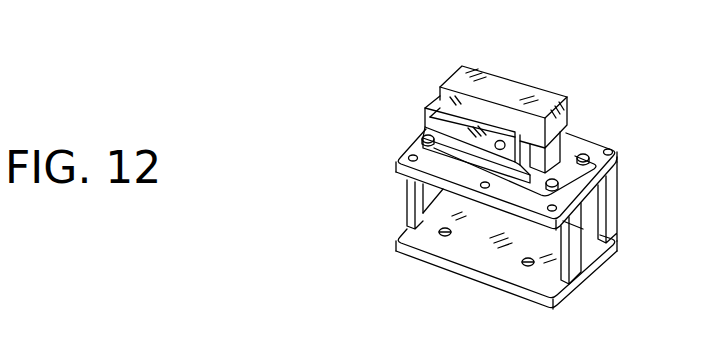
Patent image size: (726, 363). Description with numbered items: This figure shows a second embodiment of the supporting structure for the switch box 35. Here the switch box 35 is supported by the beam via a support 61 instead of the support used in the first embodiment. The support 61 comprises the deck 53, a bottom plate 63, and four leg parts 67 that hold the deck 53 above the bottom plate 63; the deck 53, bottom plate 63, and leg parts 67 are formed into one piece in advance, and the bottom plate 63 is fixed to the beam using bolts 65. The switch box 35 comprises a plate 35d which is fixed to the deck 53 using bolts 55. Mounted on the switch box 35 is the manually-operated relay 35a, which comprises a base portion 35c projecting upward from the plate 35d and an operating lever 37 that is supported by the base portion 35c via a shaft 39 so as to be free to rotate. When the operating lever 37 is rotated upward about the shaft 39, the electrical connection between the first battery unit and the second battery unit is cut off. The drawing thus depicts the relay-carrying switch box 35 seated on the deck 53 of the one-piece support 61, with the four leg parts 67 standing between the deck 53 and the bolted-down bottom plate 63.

The switch box 35 is at (557, 62).
The manually-operated relay 35a is at (431, 91).
The base portion 35c is at (463, 64).
The plate 35d is at (454, 151).
The operating lever 37 is at (426, 116).
The shaft 39 is at (501, 150).
The deck 53 is at (597, 164).
The bolts 55 is at (570, 183).
The support 61 is at (612, 132).
The bottom plate 63 is at (560, 291).
The bolts 65 is at (527, 267).
The leg parts 67 is at (615, 197).